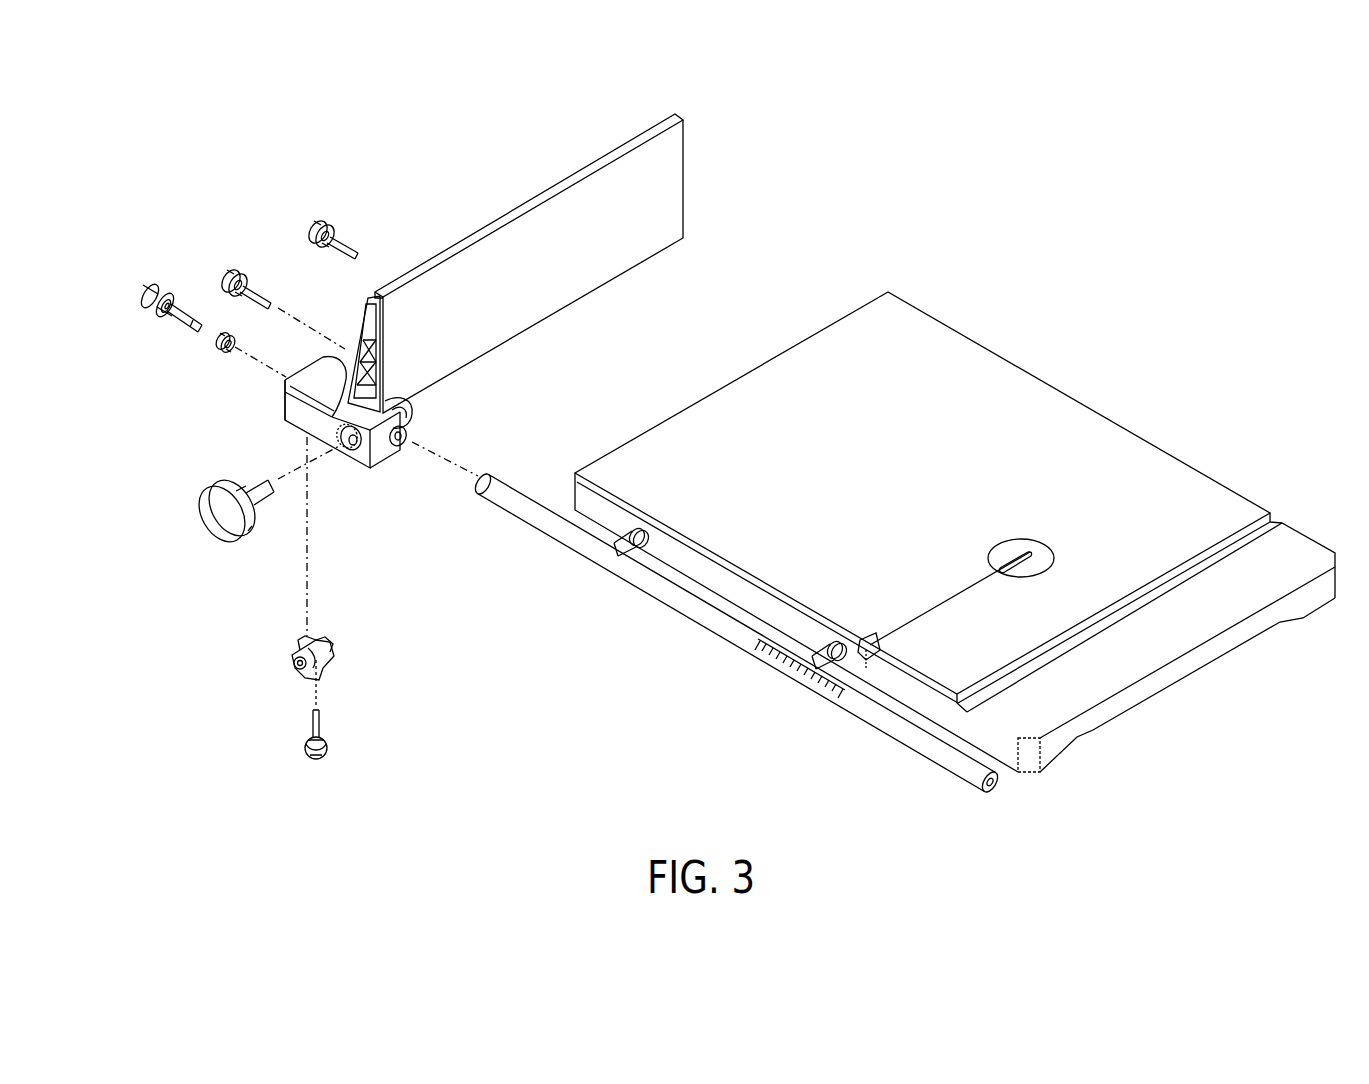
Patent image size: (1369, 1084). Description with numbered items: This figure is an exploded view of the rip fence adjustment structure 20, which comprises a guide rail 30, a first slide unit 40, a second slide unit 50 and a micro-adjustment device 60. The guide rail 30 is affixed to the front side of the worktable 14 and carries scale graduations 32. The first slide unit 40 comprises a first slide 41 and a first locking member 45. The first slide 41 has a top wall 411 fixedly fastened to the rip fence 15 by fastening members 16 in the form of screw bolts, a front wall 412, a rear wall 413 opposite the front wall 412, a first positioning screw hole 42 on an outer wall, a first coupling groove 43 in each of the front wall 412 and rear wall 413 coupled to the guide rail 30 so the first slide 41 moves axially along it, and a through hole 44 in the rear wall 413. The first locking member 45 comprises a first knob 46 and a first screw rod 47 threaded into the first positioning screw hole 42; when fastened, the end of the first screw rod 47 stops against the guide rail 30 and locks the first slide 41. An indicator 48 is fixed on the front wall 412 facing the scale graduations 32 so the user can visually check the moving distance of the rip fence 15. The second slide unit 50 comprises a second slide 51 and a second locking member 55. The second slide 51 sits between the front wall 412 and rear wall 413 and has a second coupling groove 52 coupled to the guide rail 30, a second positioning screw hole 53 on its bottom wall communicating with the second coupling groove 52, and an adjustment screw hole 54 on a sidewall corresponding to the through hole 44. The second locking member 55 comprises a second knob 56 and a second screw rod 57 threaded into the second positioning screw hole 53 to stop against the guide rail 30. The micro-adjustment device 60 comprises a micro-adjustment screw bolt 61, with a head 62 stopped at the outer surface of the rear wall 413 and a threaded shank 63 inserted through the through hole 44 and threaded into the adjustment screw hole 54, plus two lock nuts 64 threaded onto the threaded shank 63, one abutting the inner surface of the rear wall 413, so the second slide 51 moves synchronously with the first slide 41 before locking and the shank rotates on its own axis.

The worktable 14 is at (1033, 412).
The rip fence 15 is at (653, 196).
The fastening members 16 is at (212, 266).
The rip fence adjustment structure 20 is at (187, 724).
The guide rail 30 is at (682, 603).
The scale graduations 32 is at (795, 673).
The first slide unit 40 is at (97, 563).
The first slide 41 is at (303, 468).
The top wall 411 is at (347, 368).
The front wall 412 is at (378, 452).
The rear wall 413 is at (268, 427).
The first positioning screw hole 42 is at (349, 450).
The first coupling groove 43 is at (403, 446).
The through hole 44 is at (294, 383).
The first locking member 45 is at (261, 586).
The first knob 46 is at (218, 518).
The first screw rod 47 is at (273, 500).
The indicator 48 is at (412, 412).
The second slide unit 50 is at (440, 670).
The second slide 51 is at (352, 674).
The second coupling groove 52 is at (328, 654).
The second positioning screw hole 53 is at (304, 676).
The adjustment screw hole 54 is at (297, 669).
The second locking member 55 is at (392, 697).
The second knob 56 is at (326, 750).
The second screw rod 57 is at (325, 723).
The micro-adjustment device 60 is at (107, 397).
The micro-adjustment screw bolt 61 is at (102, 337).
The head 62 is at (148, 306).
The threaded shank 63 is at (182, 322).
The lock nuts 64 is at (216, 360).